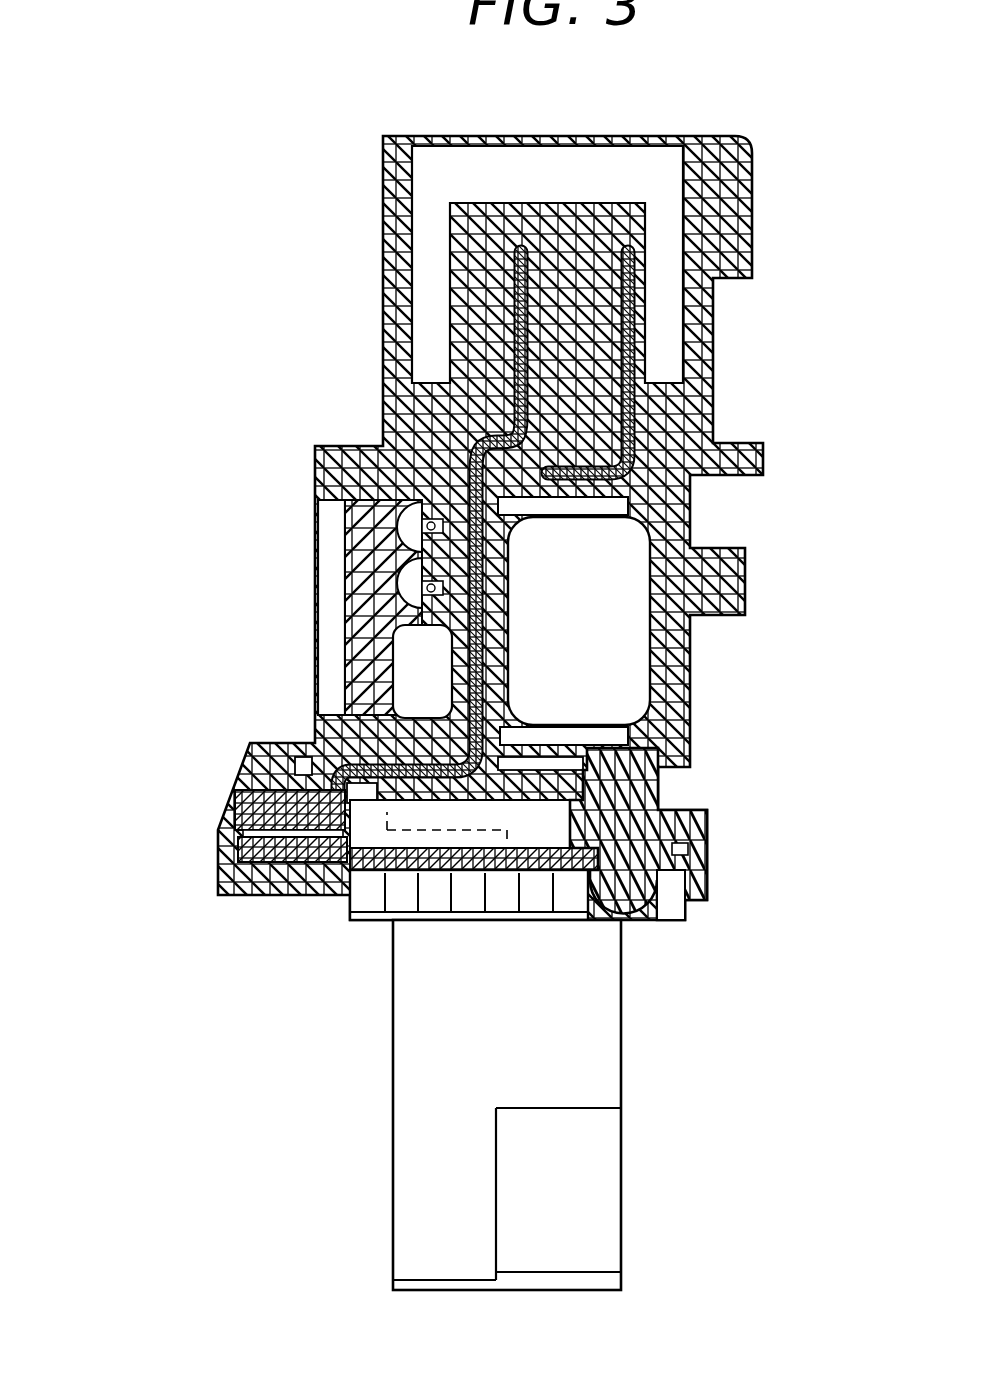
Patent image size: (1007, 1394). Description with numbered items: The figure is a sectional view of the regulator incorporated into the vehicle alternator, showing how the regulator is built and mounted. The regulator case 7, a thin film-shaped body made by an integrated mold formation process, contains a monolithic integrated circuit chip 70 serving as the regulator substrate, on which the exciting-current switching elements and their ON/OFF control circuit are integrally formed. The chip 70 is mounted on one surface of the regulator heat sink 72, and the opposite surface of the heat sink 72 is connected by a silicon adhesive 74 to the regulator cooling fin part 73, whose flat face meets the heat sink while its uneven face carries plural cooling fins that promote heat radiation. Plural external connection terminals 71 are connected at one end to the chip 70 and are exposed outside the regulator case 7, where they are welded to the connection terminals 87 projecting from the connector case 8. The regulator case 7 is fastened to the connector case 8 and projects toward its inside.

The regulator case 7 is at (450, 1080).
The connector case 8 is at (642, 802).
The monolithic integrated circuit chip 70 is at (317, 732).
The external connection terminals 71 is at (288, 850).
The regulator heat sink 72 is at (365, 862).
The regulator cooling fin part 73 is at (567, 900).
The silicon adhesive 74 is at (475, 873).
The connection terminals 87 is at (251, 793).